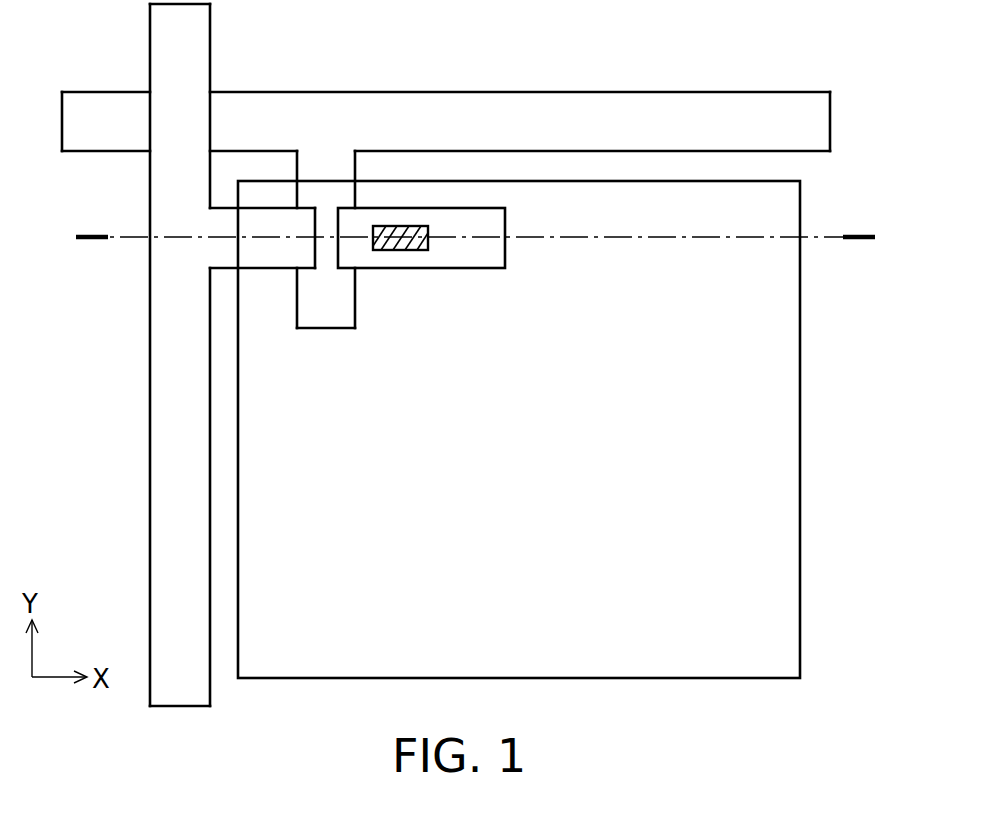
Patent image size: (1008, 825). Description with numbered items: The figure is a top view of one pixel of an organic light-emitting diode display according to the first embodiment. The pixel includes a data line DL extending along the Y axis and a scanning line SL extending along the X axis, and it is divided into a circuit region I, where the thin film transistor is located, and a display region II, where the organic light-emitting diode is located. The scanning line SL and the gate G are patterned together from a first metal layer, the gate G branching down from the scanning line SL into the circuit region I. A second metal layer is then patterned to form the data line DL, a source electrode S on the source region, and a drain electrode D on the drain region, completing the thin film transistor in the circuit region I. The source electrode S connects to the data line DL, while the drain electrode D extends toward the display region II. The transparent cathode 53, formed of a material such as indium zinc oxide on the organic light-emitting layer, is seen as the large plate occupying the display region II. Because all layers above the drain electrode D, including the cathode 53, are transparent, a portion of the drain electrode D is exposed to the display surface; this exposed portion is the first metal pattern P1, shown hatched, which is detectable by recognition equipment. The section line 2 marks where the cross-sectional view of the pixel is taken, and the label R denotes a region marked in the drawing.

The data line DL is at (158, 47).
The scanning line SL is at (823, 125).
The gate G is at (330, 330).
The source electrode S is at (272, 260).
The drain electrode D is at (475, 268).
The first metal pattern P1 is at (400, 250).
The cathode 53 is at (792, 533).
The line 2- 2 is at (92, 243).
The region R is at (89, 391).
The circuit region I is at (260, 288).
The display region II is at (802, 443).